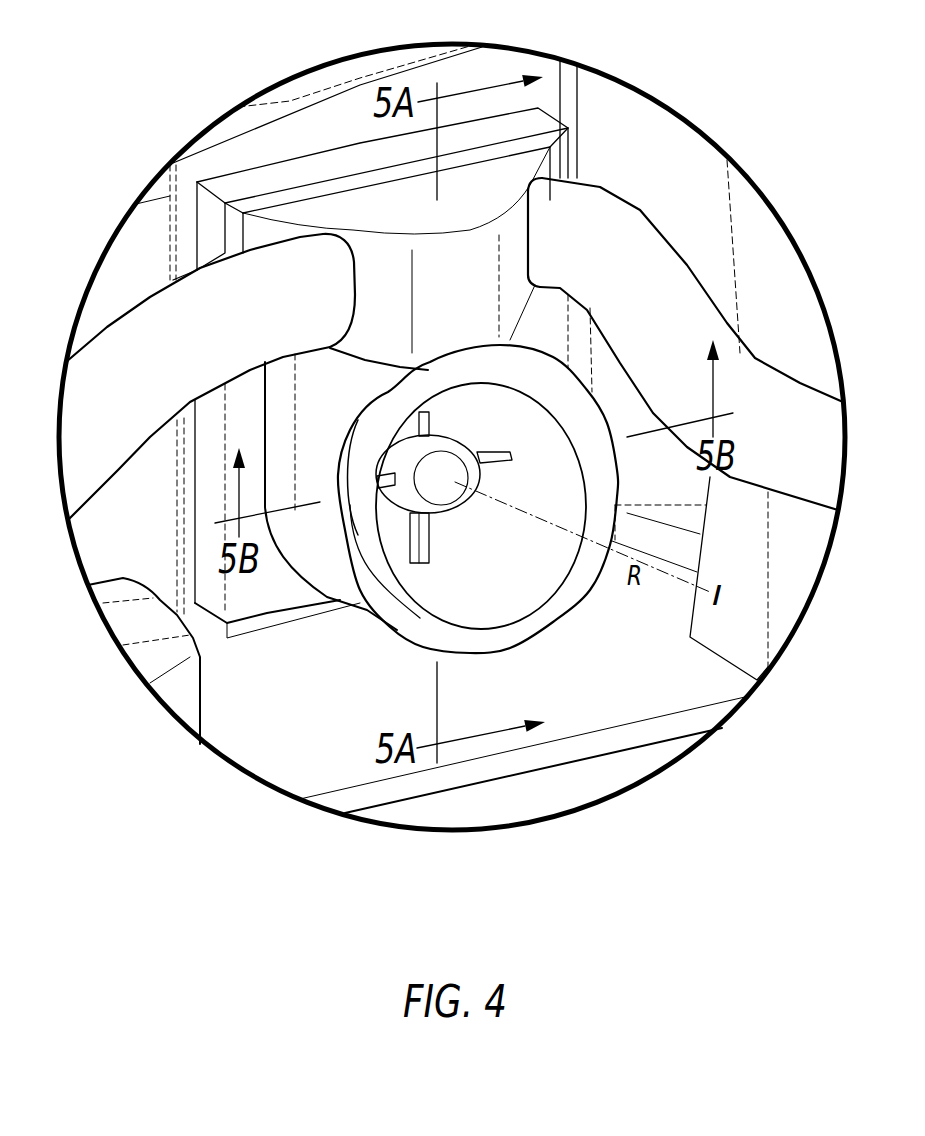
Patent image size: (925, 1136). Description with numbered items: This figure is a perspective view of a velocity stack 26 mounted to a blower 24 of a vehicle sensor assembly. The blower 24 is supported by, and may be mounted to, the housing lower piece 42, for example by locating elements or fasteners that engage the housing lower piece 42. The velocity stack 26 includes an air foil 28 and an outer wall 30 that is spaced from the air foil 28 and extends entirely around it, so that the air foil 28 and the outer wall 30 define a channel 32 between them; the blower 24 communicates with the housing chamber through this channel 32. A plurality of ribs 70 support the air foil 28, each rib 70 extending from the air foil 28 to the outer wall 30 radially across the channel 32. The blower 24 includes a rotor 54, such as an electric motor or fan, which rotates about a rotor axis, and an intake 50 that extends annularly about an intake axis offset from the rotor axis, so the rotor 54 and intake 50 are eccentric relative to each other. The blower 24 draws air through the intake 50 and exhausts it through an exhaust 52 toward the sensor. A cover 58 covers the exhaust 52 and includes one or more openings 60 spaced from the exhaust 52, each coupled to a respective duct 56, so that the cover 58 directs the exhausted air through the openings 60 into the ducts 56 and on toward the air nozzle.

The blower 24 is at (290, 562).
The velocity stack 26 is at (553, 620).
The air foil 28 is at (403, 440).
The outer wall 30 is at (465, 628).
The channel 32 is at (485, 575).
The housing lower piece 42 is at (733, 242).
The intake 50 is at (389, 536).
The exhaust 52 is at (383, 317).
The rotor 54 is at (441, 478).
The duct 56 is at (622, 197).
The cover 58 is at (357, 225).
The opening 60 is at (355, 276).
The rib 70 is at (518, 470).